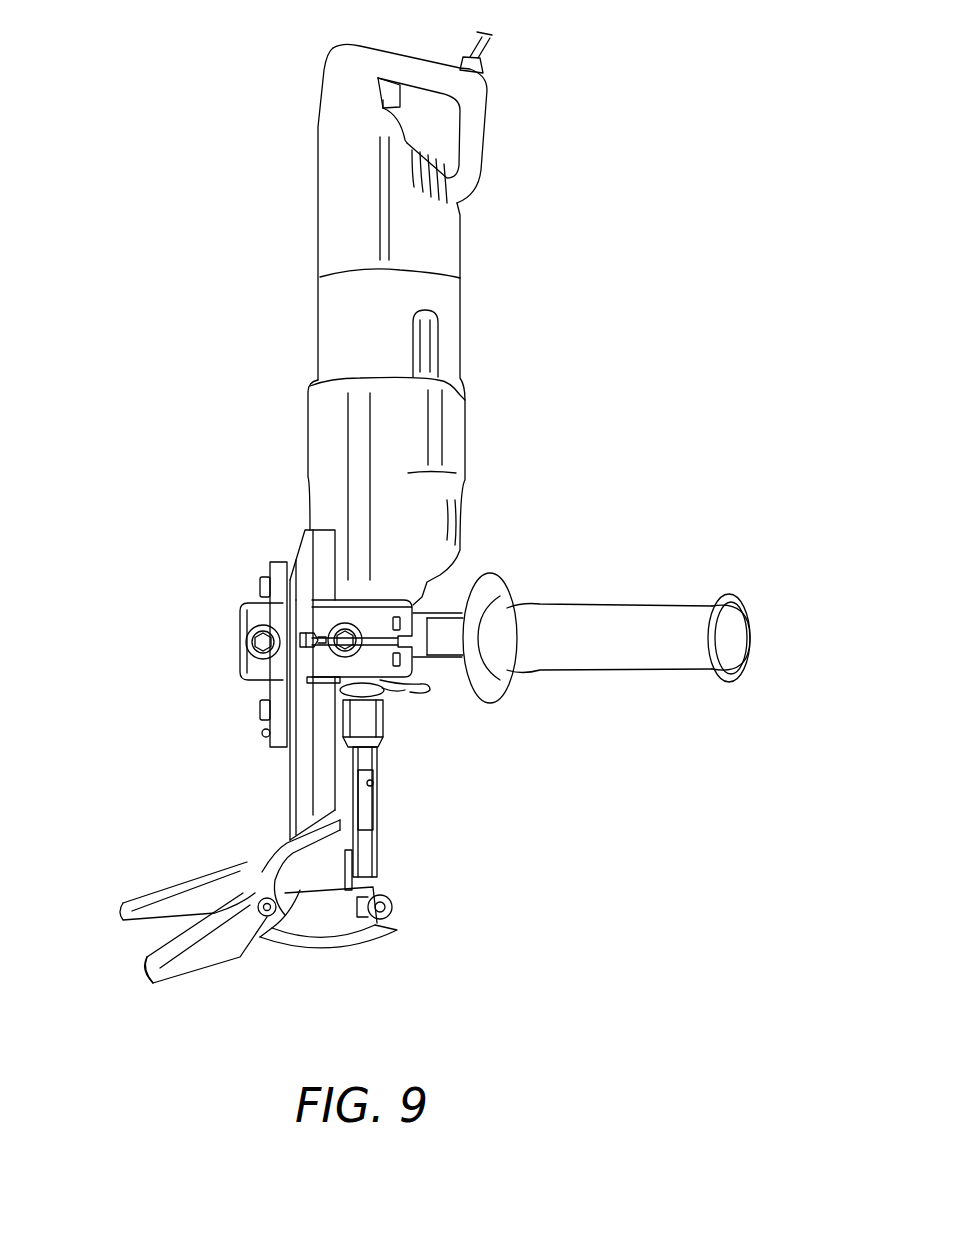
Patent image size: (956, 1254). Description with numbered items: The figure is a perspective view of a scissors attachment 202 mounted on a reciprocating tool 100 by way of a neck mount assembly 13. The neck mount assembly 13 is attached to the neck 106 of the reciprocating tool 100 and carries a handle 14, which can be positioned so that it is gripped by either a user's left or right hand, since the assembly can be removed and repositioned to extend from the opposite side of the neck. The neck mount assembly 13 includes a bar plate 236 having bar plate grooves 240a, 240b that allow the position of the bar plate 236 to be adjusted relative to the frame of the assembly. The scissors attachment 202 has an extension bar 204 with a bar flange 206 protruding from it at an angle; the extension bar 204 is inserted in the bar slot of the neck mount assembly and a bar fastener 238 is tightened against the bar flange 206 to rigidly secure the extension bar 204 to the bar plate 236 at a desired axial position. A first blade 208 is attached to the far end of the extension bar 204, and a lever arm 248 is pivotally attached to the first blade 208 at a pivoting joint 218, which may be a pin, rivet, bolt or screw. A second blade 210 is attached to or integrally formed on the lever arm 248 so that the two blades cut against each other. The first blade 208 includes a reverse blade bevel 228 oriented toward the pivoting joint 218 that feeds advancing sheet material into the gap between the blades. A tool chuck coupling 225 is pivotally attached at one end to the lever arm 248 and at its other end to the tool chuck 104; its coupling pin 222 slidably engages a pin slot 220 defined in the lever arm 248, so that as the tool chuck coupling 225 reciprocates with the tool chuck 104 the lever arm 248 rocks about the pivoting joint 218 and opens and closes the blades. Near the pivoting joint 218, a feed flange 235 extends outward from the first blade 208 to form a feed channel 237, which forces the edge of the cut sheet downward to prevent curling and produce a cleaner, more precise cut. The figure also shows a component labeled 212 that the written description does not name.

The reciprocating tool 100 is at (215, 266).
The neck mount assembly 13 is at (192, 630).
The handle 14 is at (582, 618).
The tool chuck 104 is at (388, 722).
The neck 106 is at (381, 694).
The scissors attachment 202 is at (102, 787).
The extension bar 204 is at (307, 762).
The bar flange 206 is at (321, 547).
The first blade 208 is at (183, 947).
The second blade 210 is at (153, 917).
The shoe 212 is at (353, 953).
The pivoting joint 218 is at (260, 917).
The pin slot 220 is at (351, 908).
The coupling pin 222 is at (393, 910).
The tool chuck coupling 225 is at (432, 817).
The reverse blade bevel 228 is at (142, 968).
The feed flange 235 is at (354, 813).
The bar plate 236 is at (263, 672).
The feed channel 237 is at (273, 858).
The bar fastener 238 is at (300, 630).
The bar plate groove 240a is at (428, 607).
The bar plate groove 240b is at (232, 640).
The lever arm 248 is at (325, 905).